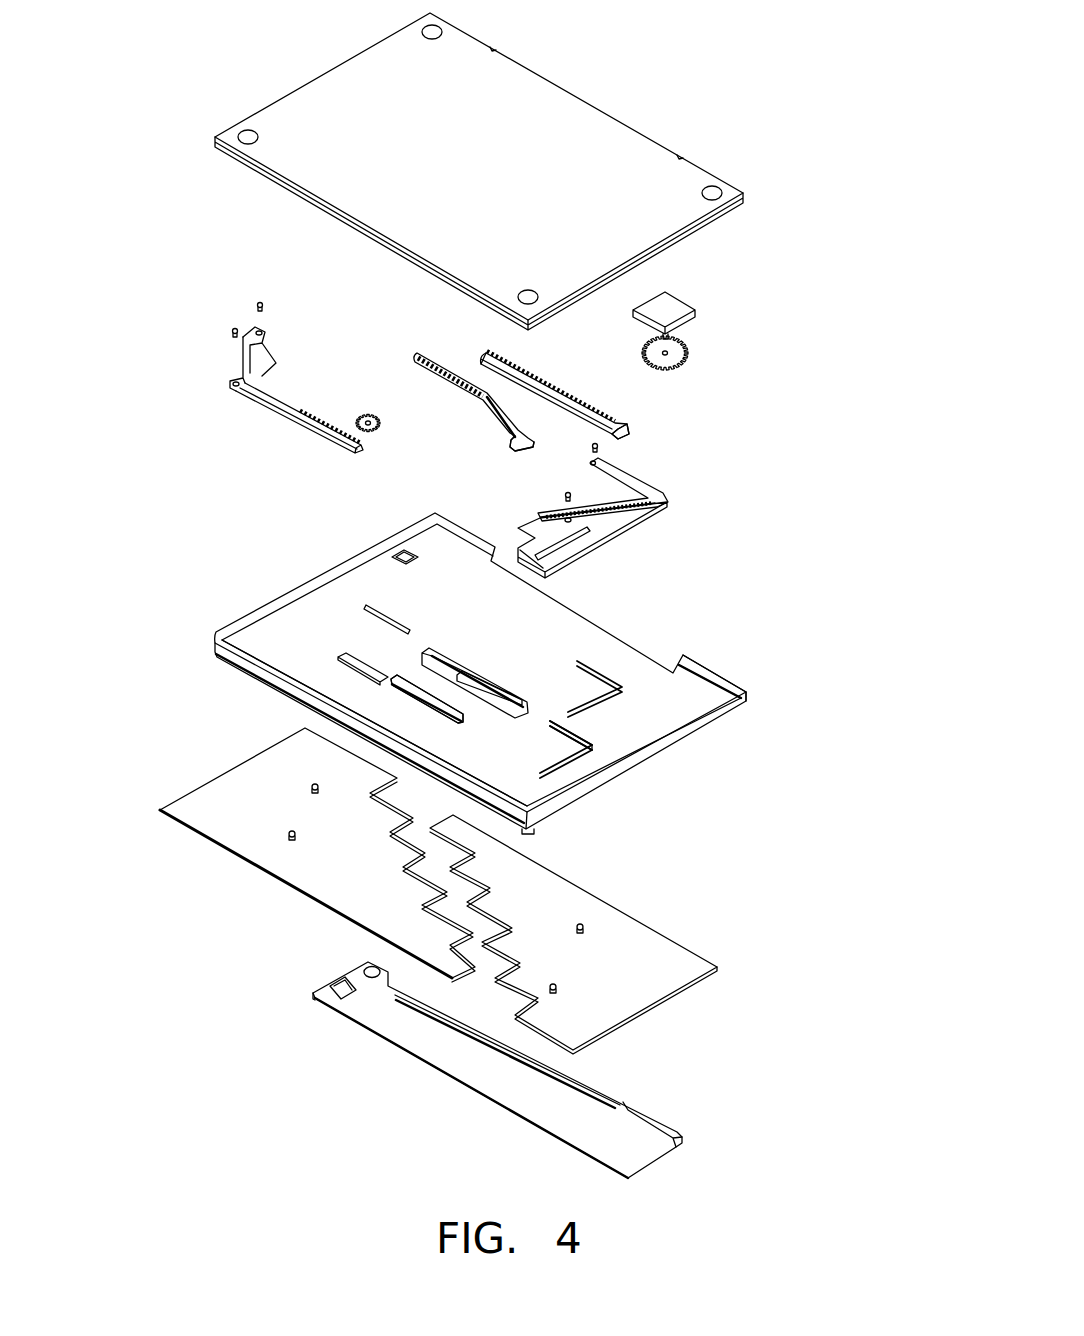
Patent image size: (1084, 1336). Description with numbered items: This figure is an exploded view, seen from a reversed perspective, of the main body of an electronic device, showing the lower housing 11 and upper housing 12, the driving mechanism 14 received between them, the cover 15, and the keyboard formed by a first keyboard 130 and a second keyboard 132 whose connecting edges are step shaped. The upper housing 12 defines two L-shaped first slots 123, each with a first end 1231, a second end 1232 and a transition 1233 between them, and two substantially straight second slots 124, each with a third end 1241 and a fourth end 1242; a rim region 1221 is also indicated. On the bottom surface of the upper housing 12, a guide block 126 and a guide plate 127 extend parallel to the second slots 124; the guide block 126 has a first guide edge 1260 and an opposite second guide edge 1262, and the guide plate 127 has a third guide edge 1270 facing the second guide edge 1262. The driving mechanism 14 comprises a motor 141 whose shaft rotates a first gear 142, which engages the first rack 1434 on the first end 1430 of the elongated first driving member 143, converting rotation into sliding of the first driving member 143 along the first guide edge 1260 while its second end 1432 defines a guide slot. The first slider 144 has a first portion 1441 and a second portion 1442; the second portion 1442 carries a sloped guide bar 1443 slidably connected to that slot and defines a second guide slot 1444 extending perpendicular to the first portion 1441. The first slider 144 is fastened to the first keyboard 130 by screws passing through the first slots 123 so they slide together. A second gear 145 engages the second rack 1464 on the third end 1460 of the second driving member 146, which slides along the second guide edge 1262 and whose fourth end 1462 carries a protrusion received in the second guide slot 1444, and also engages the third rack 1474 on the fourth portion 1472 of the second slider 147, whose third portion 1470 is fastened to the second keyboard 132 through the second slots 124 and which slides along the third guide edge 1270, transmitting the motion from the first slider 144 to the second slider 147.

The lower housing 11 is at (550, 135).
The upper housing 12 is at (463, 682).
The driving mechanism 14 is at (203, 232).
The cover 15 is at (630, 1138).
The first slot 123 is at (664, 732).
The second slot 124 is at (278, 688).
The guide block 126 is at (348, 610).
The guide plate 127 is at (315, 718).
The first keyboard 130 is at (673, 966).
The second keyboard 132 is at (357, 887).
The motor 141 is at (665, 310).
The first gear 142 is at (687, 353).
The first driving member 143 is at (593, 389).
The first slider 144 is at (618, 526).
The second gear 145 is at (356, 419).
The second driving member 146 is at (440, 378).
The second slider 147 is at (230, 372).
The side rim 1221 is at (685, 717).
The first end 1231 is at (567, 730).
The second end 1232 is at (583, 745).
The transition 1233 is at (587, 750).
The third end 1241 is at (395, 683).
The fourth end 1242 is at (338, 657).
The first guide edge 1260 is at (448, 655).
The second guide edge 1262 is at (420, 663).
The third guide edge 1270 is at (468, 712).
The first end 1430 is at (533, 383).
The second end 1432 is at (625, 425).
The first rack 1434 is at (495, 342).
The first portion 1441 is at (630, 480).
The second portion 1442 is at (604, 555).
The guide bar 1443 is at (560, 510).
The second guide slot 1444 is at (558, 543).
The third end 1460 is at (440, 378).
The fourth end 1462 is at (510, 441).
The second rack 1464 is at (418, 364).
The third portion 1470 is at (253, 333).
The fourth portion 1472 is at (285, 415).
The third rack 1474 is at (279, 421).